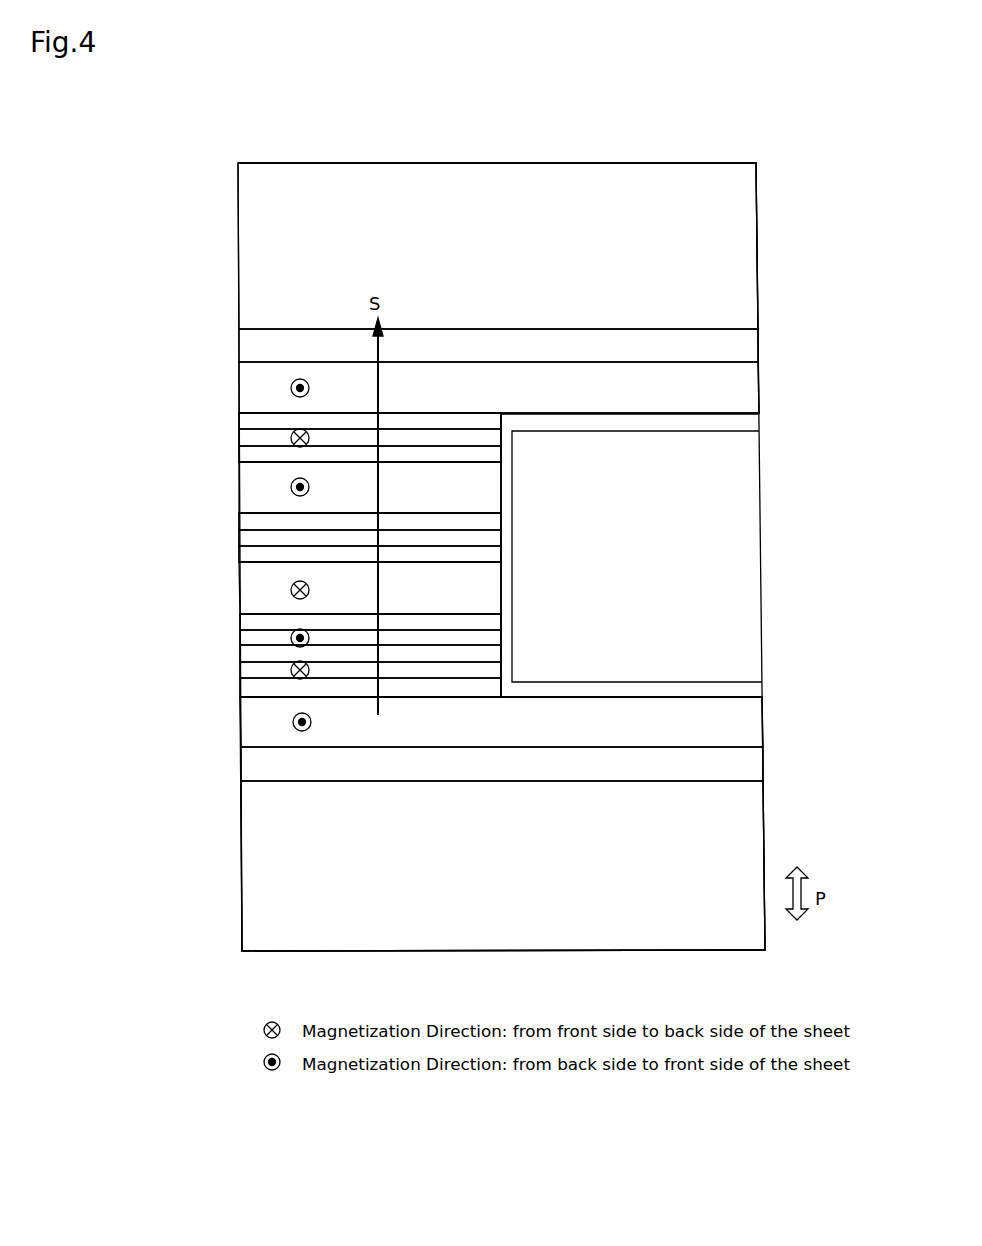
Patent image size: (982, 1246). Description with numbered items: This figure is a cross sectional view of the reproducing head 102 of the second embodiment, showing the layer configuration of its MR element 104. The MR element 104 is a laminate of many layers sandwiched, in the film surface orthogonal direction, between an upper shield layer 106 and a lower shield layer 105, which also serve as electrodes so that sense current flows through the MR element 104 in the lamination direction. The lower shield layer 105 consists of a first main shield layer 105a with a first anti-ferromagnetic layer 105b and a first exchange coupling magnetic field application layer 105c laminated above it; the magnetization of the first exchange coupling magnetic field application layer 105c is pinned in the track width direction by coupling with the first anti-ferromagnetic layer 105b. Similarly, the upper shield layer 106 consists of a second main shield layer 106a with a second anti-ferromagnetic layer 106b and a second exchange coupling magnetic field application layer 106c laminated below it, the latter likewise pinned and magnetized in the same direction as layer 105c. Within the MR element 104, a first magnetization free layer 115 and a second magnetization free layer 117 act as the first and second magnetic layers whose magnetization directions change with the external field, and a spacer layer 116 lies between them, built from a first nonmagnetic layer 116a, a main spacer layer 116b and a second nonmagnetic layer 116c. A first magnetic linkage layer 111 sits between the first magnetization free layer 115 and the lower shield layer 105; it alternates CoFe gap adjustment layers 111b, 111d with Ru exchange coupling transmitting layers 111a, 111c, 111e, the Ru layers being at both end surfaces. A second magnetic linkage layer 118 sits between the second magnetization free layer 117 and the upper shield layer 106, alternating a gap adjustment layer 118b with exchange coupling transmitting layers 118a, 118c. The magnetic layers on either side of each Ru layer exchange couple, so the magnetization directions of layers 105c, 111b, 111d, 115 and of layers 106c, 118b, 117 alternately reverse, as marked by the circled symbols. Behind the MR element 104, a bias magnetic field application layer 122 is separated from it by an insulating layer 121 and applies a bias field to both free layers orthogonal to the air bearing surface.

The reproducing head 102 is at (462, 151).
The MR element 104 is at (94, 433).
The lower shield layer 105 is at (433, 824).
The first main shield layer 105a is at (458, 866).
The first anti-ferromagnetic layer 105b is at (241, 763).
The first exchange coupling magnetic field application layer 105c is at (240, 722).
The upper shield layer 106 is at (429, 288).
The second main shield layer 106a is at (238, 253).
The second anti-ferromagnetic layer 106b is at (239, 350).
The second exchange coupling magnetic field application layer 106c is at (454, 387).
The first magnetic linkage layer 111 is at (300, 658).
The exchange coupling transmitting layer 111a is at (240, 689).
The gap adjustment layer 111b is at (240, 672).
The exchange coupling transmitting layer 111c is at (240, 656).
The gap adjustment layer 111d is at (240, 640).
The exchange coupling transmitting layer 111e is at (240, 623).
The first magnetization free layer 115 is at (239, 588).
The spacer layer 116 is at (300, 539).
The first nonmagnetic layer 116a is at (239, 554).
The main spacer layer 116b is at (239, 538).
The second nonmagnetic layer 116c is at (239, 521).
The second magnetization free layer 117 is at (239, 488).
The second magnetic linkage layer 118 is at (300, 439).
The exchange coupling transmitting layer 118a is at (239, 457).
The gap adjustment layer 118b is at (239, 439).
The exchange coupling transmitting layer 118c is at (239, 421).
The insulating layer 121 is at (752, 693).
The bias magnetic field application layer 122 is at (759, 542).